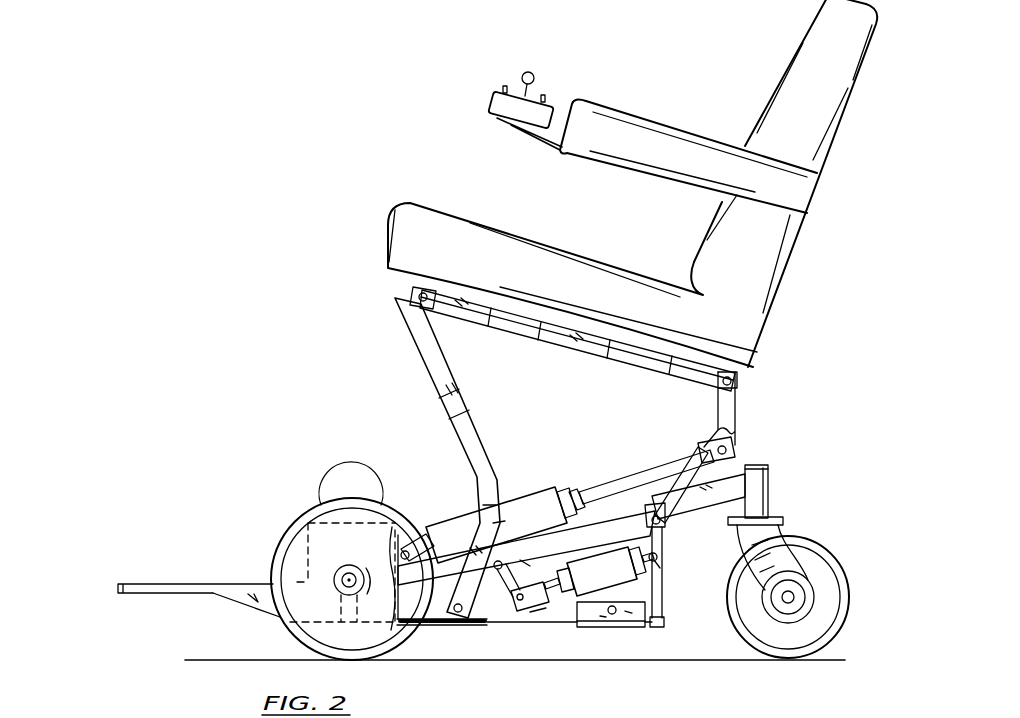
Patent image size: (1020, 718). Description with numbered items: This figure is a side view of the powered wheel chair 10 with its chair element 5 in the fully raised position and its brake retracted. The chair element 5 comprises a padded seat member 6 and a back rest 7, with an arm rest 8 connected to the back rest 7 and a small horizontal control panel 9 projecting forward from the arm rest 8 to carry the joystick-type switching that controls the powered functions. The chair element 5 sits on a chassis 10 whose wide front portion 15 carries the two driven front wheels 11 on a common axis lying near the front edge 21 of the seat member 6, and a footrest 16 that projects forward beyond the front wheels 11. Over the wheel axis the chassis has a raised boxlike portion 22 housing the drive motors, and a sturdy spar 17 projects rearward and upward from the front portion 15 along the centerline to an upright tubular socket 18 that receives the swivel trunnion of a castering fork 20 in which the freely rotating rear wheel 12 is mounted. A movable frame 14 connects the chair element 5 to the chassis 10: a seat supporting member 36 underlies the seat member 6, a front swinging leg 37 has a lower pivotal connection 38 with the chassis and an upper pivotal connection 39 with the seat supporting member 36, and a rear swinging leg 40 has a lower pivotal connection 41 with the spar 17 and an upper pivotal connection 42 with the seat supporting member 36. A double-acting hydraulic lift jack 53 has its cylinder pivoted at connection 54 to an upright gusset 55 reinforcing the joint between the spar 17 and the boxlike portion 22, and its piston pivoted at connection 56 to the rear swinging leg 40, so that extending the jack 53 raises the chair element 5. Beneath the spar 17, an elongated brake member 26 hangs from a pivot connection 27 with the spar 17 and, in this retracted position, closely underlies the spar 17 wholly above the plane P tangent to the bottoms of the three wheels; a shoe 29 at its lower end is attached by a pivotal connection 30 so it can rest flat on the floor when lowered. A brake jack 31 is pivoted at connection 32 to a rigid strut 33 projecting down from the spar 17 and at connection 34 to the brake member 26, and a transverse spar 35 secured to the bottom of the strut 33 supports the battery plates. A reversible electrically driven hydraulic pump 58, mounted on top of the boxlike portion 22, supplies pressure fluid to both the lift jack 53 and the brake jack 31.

The chair element 5 is at (737, 98).
The seat member 6 is at (543, 238).
The back rest 7 is at (802, 42).
The arm rests 8 is at (650, 117).
The control panel 9 is at (490, 102).
The chassis 10 is at (836, 486).
The front wheels 11 is at (295, 518).
The rear wheel 12 is at (843, 567).
The movable frame 14 is at (410, 362).
The front portion 15 is at (218, 608).
The footrest 16 is at (155, 583).
The spar 17 is at (729, 488).
The tubular socket 18 is at (768, 487).
The castering fork 20 is at (786, 548).
The front edge 21 is at (390, 223).
The boxlike portion 22 is at (396, 523).
The brake member 26 is at (552, 607).
The pivot connection 27 is at (498, 570).
The shoe 29 is at (612, 613).
The pivotal connection 30 is at (610, 614).
The hydraulic cylinder jack 31 is at (612, 573).
The pivotal connection 32 is at (660, 557).
The strut 33 is at (662, 583).
The pivotal connection 34 is at (537, 592).
The transverse spar 35 is at (663, 622).
The seat supporting member 36 is at (580, 347).
The front swinging leg 37 is at (474, 430).
The lower pivotal connection 38 is at (458, 612).
The upper pivotal connection 39 is at (413, 289).
The rear swinging leg 40 is at (710, 407).
The lower pivotal connection 41 is at (655, 513).
The upper pivotal connection 42 is at (737, 379).
The hydraulic cylinder jack 53 is at (538, 515).
The pivotal connection 54 is at (412, 547).
The gusset 55 is at (423, 580).
The pivotal connection 56 is at (732, 443).
The hydraulic pump 58 is at (337, 465).
The plane P is at (200, 660).